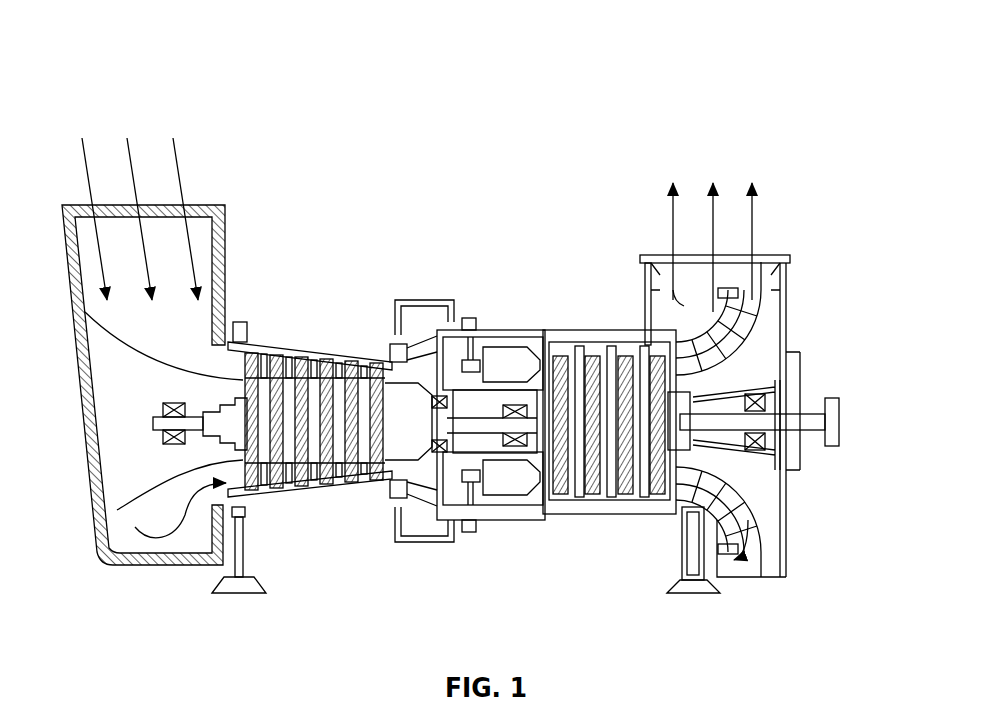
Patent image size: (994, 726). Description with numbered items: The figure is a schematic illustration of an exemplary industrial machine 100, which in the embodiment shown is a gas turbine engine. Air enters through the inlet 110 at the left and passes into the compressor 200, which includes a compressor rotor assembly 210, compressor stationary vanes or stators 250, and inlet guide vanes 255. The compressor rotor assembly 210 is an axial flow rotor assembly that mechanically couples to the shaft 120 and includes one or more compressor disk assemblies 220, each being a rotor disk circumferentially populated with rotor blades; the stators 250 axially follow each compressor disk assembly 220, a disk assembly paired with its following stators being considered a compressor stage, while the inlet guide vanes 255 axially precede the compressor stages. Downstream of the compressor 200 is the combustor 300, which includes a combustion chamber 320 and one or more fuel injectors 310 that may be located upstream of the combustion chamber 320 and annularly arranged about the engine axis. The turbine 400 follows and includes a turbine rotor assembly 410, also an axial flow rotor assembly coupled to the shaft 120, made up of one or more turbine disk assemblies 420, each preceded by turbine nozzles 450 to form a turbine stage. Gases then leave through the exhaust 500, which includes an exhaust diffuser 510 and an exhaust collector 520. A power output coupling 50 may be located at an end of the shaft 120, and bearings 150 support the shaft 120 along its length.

The industrial machine 100 is at (205, 42).
The inlet 110 is at (223, 115).
The shaft 120 is at (158, 418).
The bearings 150 is at (183, 444).
The compressor 200 is at (423, 115).
The compressor rotor assembly 210 is at (309, 520).
The compressor disk assembly 220 is at (292, 503).
The compressor stationary vanes (stators) 250 is at (310, 350).
The inlet guide vanes 255 is at (244, 328).
The combustor 300 is at (531, 115).
The fuel injectors 310 is at (466, 318).
The combustion chamber 320 is at (505, 340).
The turbine 400 is at (665, 115).
The turbine rotor assembly 410 is at (597, 527).
The turbine disk assembly 420 is at (665, 508).
The turbine nozzles 450 is at (627, 342).
The exhaust 500 is at (815, 138).
The exhaust diffuser 510 is at (690, 343).
The exhaust collector 520 is at (767, 296).
The power output coupling 50 is at (832, 403).